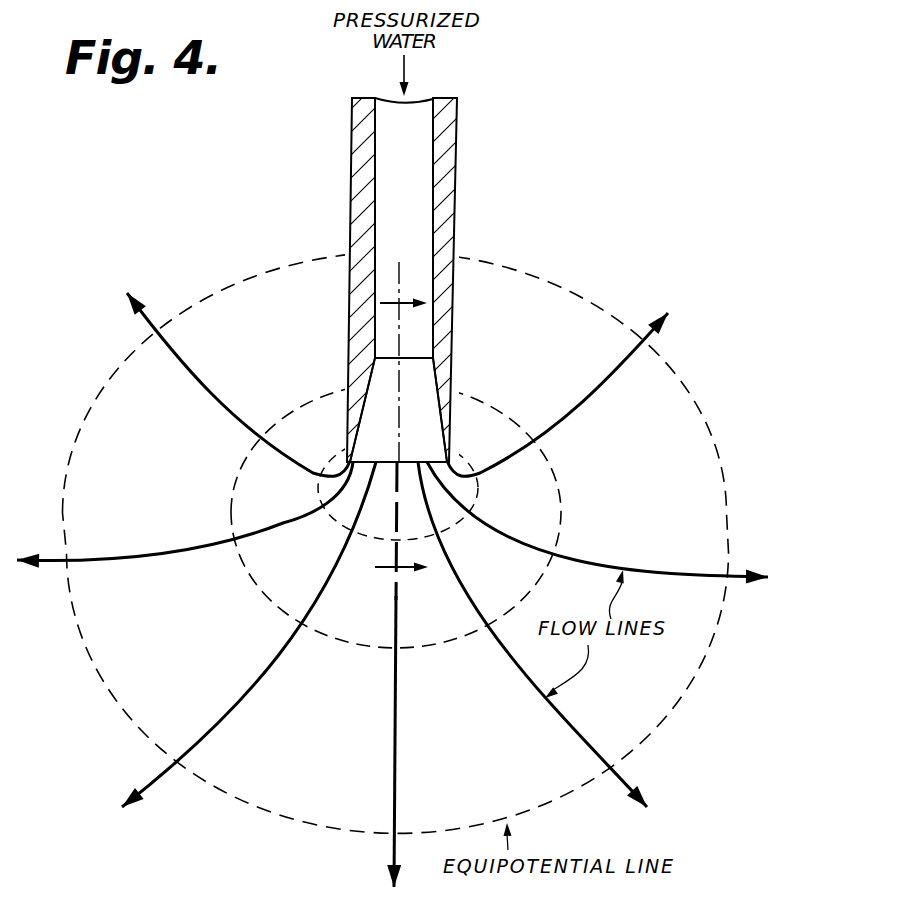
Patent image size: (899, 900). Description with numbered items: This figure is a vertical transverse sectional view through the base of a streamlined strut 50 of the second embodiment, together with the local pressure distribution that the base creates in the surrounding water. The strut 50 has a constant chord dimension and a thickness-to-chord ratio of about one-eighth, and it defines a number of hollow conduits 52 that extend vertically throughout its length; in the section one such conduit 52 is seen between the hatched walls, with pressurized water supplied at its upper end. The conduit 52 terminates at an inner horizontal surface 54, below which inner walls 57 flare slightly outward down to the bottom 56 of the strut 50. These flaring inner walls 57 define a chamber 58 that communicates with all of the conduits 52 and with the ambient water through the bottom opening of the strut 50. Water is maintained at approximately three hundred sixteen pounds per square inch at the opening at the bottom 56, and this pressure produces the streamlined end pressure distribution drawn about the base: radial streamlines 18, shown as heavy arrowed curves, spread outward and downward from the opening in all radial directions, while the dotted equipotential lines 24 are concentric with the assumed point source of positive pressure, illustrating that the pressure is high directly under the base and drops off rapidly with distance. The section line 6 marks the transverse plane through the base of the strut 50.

The streamlines 18 is at (586, 399).
The equipotential lines 24 is at (338, 644).
The streamlined strut 50 is at (340, 131).
The hollow conduits 52 is at (390, 185).
The inner horizontal surface 54 is at (393, 358).
The bottom 56 is at (438, 466).
The inner walls 57 is at (427, 383).
The chamber 58 is at (422, 424).
The section line 6- 6 is at (401, 436).